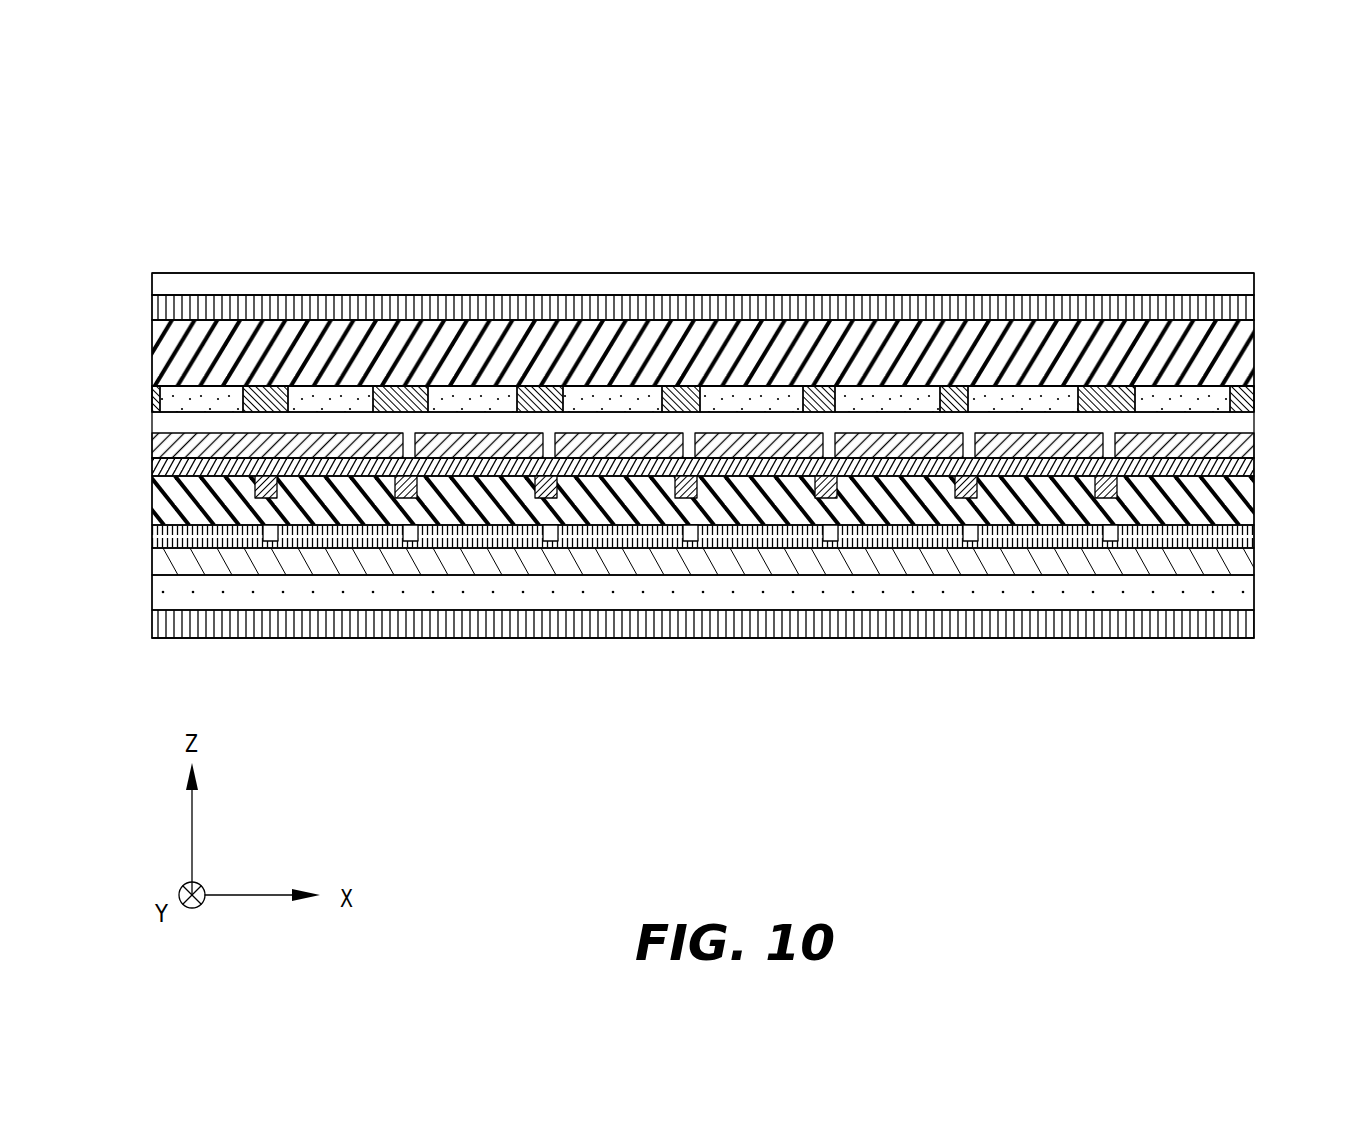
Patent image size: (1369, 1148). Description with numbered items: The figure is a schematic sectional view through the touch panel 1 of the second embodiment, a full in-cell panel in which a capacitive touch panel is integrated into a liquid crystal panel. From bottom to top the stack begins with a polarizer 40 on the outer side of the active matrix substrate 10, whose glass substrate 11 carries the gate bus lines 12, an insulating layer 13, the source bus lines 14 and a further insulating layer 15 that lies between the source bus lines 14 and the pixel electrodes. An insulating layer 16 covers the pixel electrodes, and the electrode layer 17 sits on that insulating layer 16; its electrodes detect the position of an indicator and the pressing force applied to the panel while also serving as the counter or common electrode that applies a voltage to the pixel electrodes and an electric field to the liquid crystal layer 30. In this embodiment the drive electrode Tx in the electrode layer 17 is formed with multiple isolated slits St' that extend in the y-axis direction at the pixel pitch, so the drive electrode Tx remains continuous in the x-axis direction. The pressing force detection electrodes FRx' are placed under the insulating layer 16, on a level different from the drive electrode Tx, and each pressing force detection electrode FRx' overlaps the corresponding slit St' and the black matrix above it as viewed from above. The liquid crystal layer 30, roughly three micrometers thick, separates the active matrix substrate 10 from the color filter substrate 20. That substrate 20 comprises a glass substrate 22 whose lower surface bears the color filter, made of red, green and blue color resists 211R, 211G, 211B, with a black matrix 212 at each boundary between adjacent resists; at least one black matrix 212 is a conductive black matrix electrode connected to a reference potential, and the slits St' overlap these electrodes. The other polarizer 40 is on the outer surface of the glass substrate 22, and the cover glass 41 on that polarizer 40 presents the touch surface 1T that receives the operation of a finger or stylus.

The touch panel 1 is at (263, 277).
The touch surface 1T is at (229, 293).
The active matrix substrate 10 is at (1268, 430).
The glass substrate 11 is at (152, 592).
The gate bus lines 12 is at (152, 561).
The insulating layer 13 is at (152, 536).
The source bus lines 14 is at (411, 541).
The insulating layer 15 is at (152, 497).
The insulating layer 16 is at (152, 465).
The electrode layer 17 is at (145, 458).
The color filter substrate 20 is at (1268, 320).
The glass substrate 22 is at (152, 343).
The liquid crystal layer 30 is at (1268, 387).
The polarizer 40 is at (152, 306).
The cover glass 41 is at (152, 283).
The green color resist 211G is at (226, 388).
The blue color resist 211B is at (353, 388).
The red color resist 211R is at (457, 388).
The black matrix 212 is at (382, 388).
The drive electrode Tx is at (525, 433).
The slit St' is at (656, 304).
The pressing force detection electrode FRx' is at (686, 592).